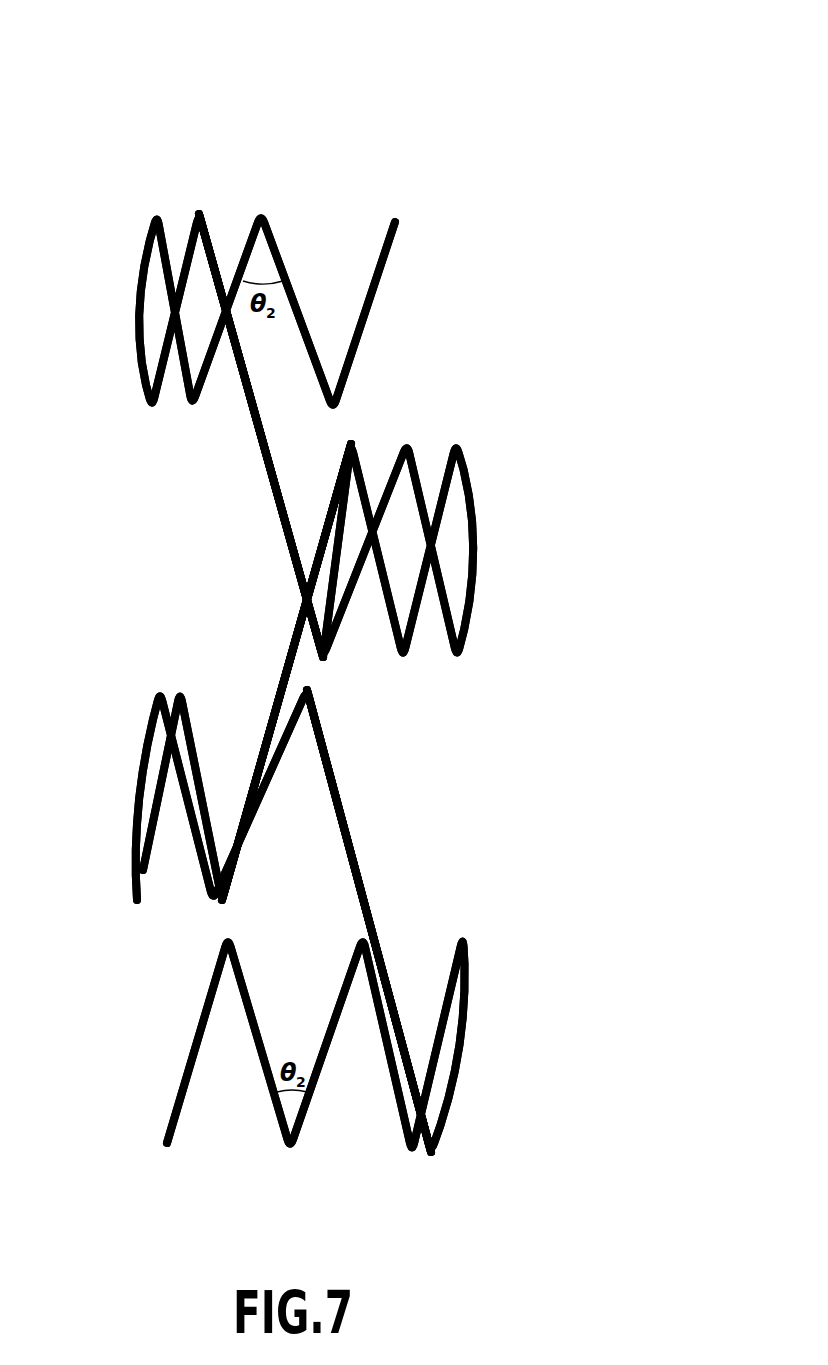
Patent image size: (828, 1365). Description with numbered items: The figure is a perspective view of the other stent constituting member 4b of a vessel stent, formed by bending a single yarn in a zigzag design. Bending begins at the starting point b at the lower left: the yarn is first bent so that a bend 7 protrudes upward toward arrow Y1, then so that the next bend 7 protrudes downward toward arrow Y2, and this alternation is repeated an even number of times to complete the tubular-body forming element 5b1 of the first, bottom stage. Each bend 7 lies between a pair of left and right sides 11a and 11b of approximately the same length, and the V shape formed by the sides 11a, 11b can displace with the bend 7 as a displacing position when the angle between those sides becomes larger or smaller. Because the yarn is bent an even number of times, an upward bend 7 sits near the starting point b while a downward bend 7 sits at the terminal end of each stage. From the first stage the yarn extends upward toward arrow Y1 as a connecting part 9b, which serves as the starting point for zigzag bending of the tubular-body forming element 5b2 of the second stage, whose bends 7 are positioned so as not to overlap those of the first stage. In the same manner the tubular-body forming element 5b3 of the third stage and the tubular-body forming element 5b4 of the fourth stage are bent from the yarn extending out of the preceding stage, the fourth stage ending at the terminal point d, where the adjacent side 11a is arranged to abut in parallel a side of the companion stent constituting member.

The other stent constituting member 4b is at (427, 73).
The tubular-body forming element of the first stage 5b1 is at (457, 1016).
The tubular-body forming element of the second stage 5b2 is at (147, 753).
The tubular-body forming element of the third stage 5b3 is at (475, 517).
The tubular-body forming element of the fourth stage 5b4 is at (140, 311).
The bend 7 is at (367, 937).
The connecting part 9b is at (255, 433).
The side 11a is at (218, 253).
The side 11b is at (190, 237).
The terminal point of bending d is at (393, 216).
The starting point of bending b is at (165, 1147).
The arrow Y1 is at (718, 297).
The arrow Y2 is at (708, 1077).